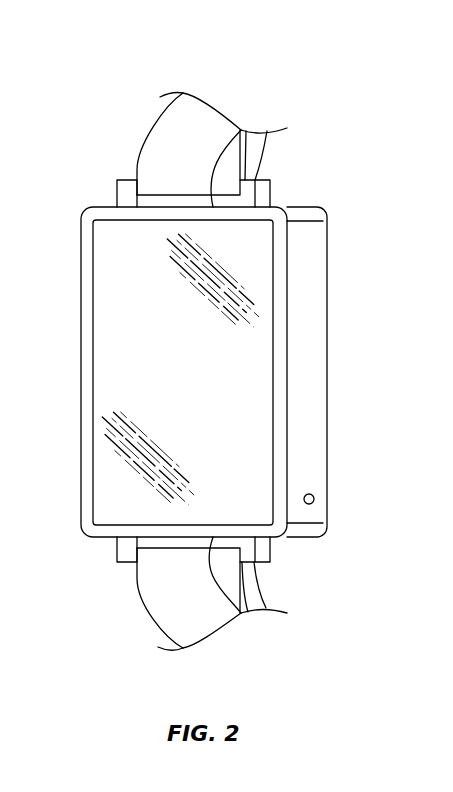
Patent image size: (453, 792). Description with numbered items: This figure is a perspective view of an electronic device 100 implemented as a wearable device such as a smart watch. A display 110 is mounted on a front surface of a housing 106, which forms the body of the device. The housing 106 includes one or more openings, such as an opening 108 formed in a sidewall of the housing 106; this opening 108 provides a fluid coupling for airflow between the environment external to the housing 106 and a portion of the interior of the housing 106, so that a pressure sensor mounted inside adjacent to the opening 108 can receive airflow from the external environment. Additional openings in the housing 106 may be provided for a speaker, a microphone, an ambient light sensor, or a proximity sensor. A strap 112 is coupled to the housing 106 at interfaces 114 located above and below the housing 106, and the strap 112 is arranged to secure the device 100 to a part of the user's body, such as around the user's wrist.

The electronic device 100 is at (85, 86).
The housing 106 is at (100, 538).
The opening 108 is at (315, 500).
The display 110 is at (110, 315).
The strap 112 is at (202, 123).
The interfaces 114 is at (245, 130).